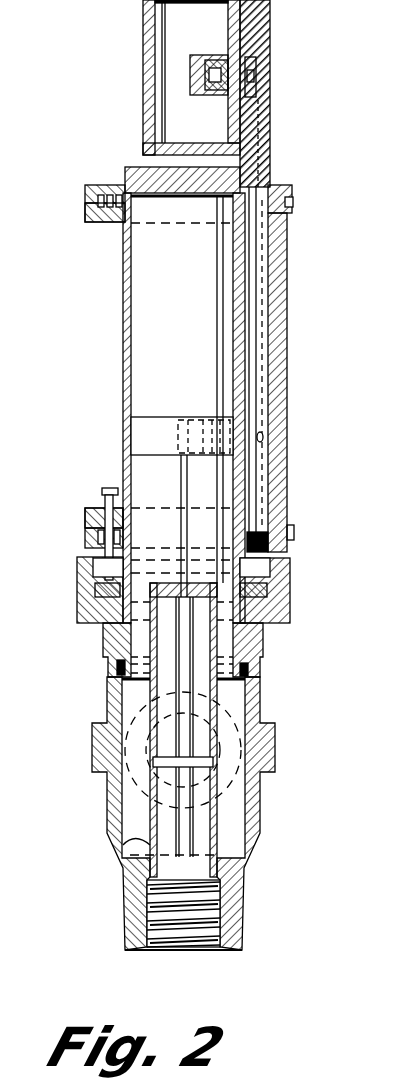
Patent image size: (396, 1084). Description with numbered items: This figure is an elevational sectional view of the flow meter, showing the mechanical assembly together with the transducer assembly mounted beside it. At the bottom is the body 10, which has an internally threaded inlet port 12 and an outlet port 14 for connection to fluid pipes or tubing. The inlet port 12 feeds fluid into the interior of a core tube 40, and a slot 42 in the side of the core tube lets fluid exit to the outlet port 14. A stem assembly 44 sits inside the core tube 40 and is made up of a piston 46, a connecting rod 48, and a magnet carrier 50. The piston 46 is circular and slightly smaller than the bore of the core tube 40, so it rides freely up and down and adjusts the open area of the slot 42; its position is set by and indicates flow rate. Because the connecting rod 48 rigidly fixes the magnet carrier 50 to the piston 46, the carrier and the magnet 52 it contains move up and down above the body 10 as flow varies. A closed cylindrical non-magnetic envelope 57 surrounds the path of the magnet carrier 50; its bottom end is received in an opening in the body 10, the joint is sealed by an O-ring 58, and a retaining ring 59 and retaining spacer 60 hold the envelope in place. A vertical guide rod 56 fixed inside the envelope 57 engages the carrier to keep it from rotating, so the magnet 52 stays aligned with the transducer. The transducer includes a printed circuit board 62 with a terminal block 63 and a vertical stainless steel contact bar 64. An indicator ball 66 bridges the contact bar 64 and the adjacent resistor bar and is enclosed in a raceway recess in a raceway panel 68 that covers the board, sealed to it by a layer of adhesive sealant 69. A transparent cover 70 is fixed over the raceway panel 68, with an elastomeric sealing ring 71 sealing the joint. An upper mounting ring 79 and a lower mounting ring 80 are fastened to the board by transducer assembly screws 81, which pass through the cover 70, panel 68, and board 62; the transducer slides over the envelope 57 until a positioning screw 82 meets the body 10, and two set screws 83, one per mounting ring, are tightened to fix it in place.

The body 10 is at (92, 755).
The inlet port 12 is at (205, 950).
The outlet port 14 is at (220, 725).
The core tube 40 is at (130, 838).
The slot 42 is at (190, 820).
The stem assembly 44 is at (157, 725).
The piston 46 is at (150, 800).
The connecting rod 48 is at (165, 697).
The magnet carrier 50 is at (145, 455).
The magnet 52 is at (205, 420).
The guide rod 56 is at (217, 343).
The envelope 57 is at (123, 305).
The O-ring 58 is at (117, 666).
The retaining ring 59 is at (92, 580).
The retaining spacer 60 is at (80, 592).
The printed circuit board 62 is at (256, 108).
The terminal block 63 is at (218, 57).
The contact bar 64 is at (252, 300).
The indicator ball 66 is at (264, 436).
The raceway panel 68 is at (268, 163).
The adhesive sealant 69 is at (258, 140).
The transparent cover 70 is at (286, 336).
The elastomeric sealing ring 71 is at (285, 185).
The upper mounting ring 79 is at (85, 222).
The lower mounting ring 80 is at (85, 515).
The transducer assembly screws 81 is at (293, 205).
The positioning screw 82 is at (102, 492).
The set screws 83 is at (88, 210).